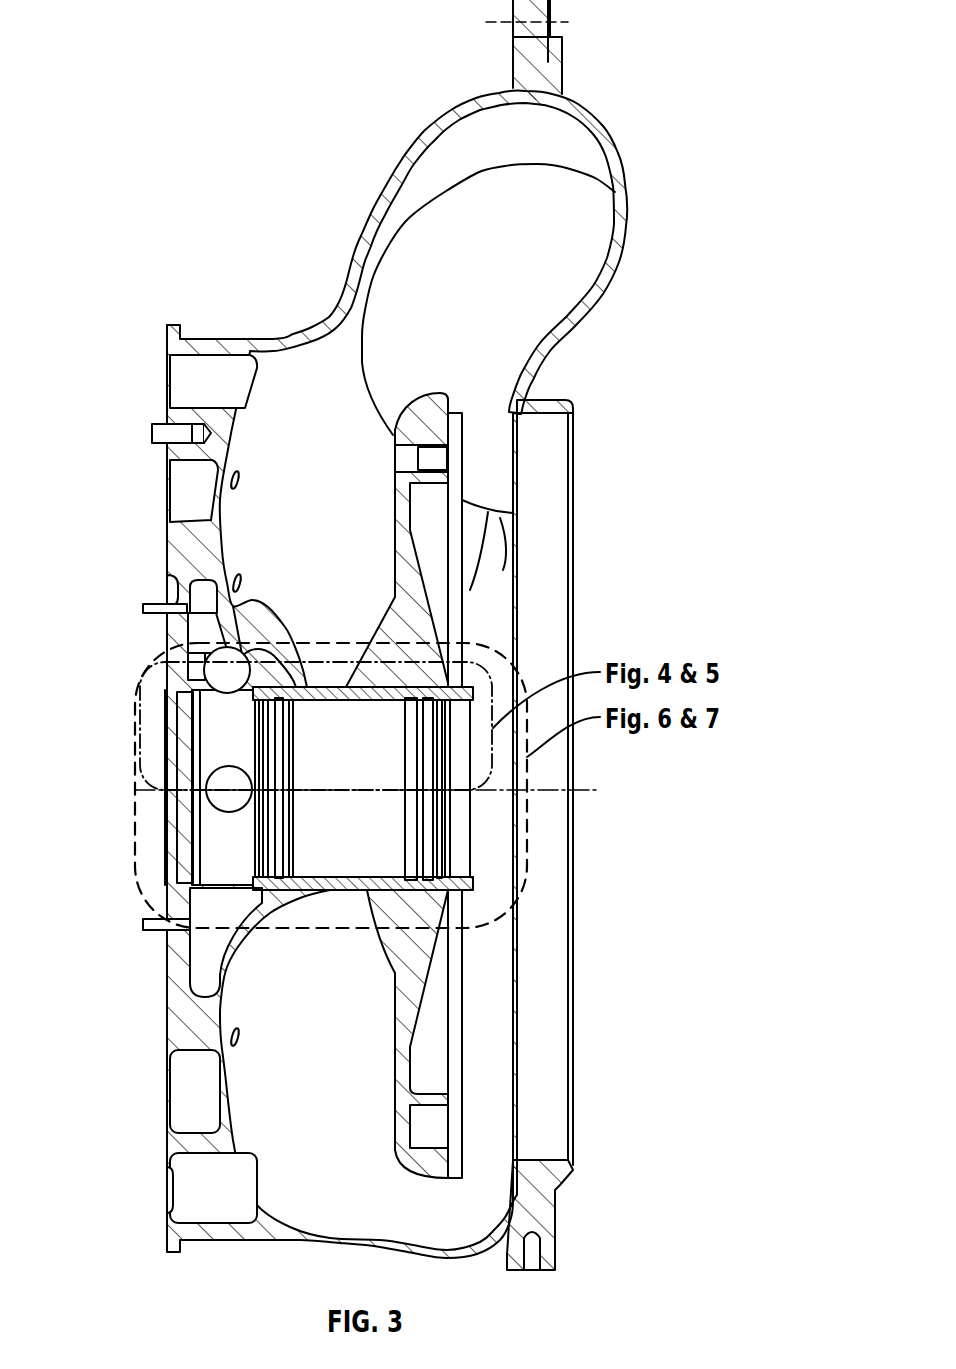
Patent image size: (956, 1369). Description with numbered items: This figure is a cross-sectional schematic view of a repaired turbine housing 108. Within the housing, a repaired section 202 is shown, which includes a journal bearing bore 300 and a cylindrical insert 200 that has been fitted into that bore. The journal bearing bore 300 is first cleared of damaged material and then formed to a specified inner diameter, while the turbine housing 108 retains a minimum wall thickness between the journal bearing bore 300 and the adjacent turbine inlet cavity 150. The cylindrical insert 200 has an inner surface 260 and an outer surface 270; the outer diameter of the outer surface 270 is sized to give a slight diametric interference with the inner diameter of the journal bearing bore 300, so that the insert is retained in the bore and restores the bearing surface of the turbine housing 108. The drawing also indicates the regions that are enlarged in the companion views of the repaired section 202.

The turbine housing 108 is at (555, 85).
The turbine inlet cavity 150 is at (320, 578).
The cylindrical insert 200 is at (372, 893).
The repaired section 202 is at (527, 807).
The inner surface 260 is at (307, 700).
The outer surface 270 is at (307, 893).
The journal bearing bore 300 is at (108, 632).